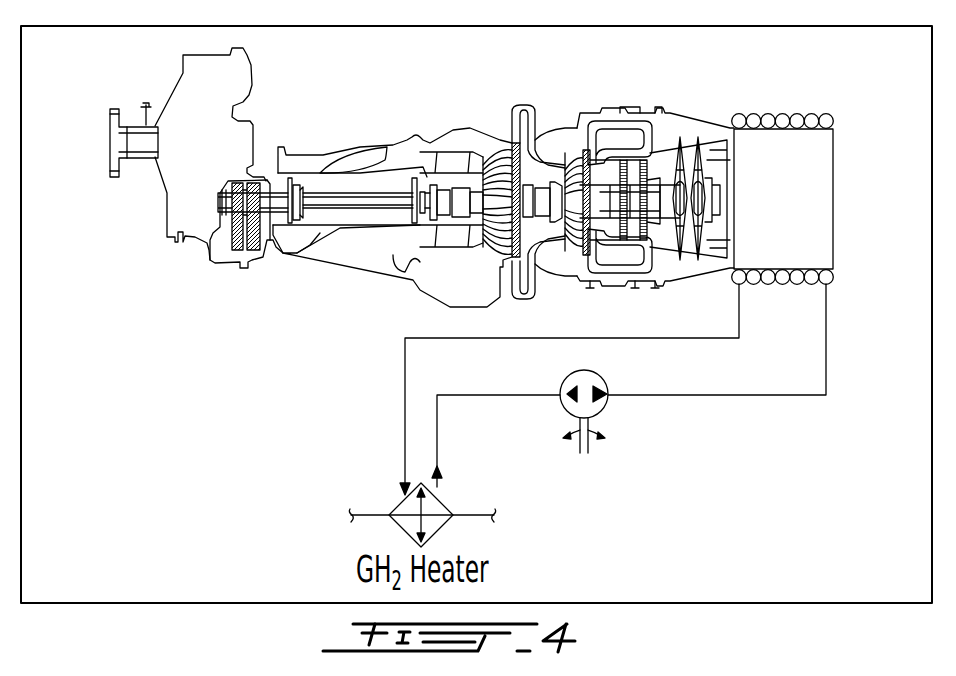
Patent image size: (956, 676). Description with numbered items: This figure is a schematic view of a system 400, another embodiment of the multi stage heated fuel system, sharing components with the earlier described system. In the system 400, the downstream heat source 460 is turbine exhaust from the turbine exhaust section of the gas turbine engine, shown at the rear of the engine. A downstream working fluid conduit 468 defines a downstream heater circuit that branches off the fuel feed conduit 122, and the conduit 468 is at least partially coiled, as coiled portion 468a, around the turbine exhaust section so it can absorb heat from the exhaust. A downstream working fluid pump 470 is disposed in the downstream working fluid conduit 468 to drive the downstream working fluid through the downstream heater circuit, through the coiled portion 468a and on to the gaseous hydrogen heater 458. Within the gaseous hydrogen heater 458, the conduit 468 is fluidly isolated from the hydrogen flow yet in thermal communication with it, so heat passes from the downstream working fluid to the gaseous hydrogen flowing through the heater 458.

The system 400 is at (660, 98).
The downstream heat source 460 is at (840, 208).
The coiled portion 468a is at (797, 113).
The downstream working fluid conduit 468 is at (635, 338).
The downstream working fluid pump 470 is at (567, 378).
The gaseous hydrogen heater 458 is at (445, 503).
The fuel feed conduit 122 is at (362, 510).